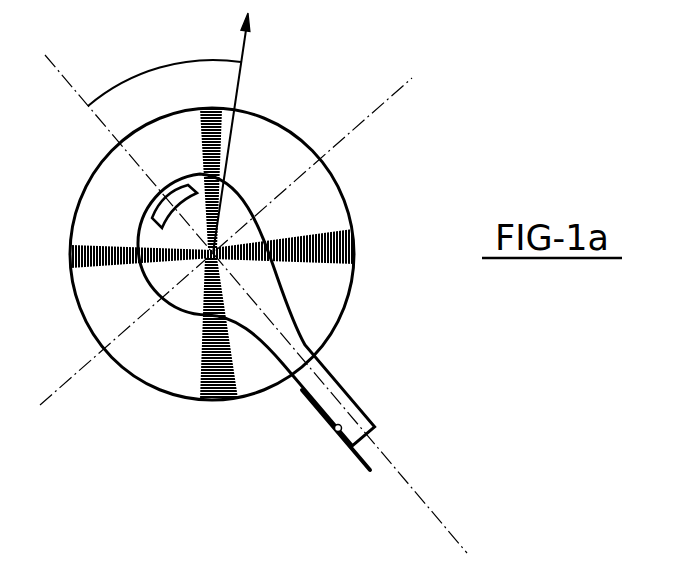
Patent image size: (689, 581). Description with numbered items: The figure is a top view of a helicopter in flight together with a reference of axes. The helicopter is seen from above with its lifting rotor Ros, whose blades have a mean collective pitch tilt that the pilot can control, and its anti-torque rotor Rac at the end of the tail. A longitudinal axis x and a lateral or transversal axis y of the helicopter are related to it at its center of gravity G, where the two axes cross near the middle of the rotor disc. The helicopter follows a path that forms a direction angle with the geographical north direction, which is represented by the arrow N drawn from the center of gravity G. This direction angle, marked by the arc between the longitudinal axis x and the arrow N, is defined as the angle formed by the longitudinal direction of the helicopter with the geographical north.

The lifting rotor Ros is at (355, 284).
The anti-torque rotor Rac is at (321, 409).
The center of gravity G is at (211, 258).
The geographical north direction N is at (246, 131).
The longitudinal axis x is at (62, 76).
The lateral or transversal axis y is at (52, 394).